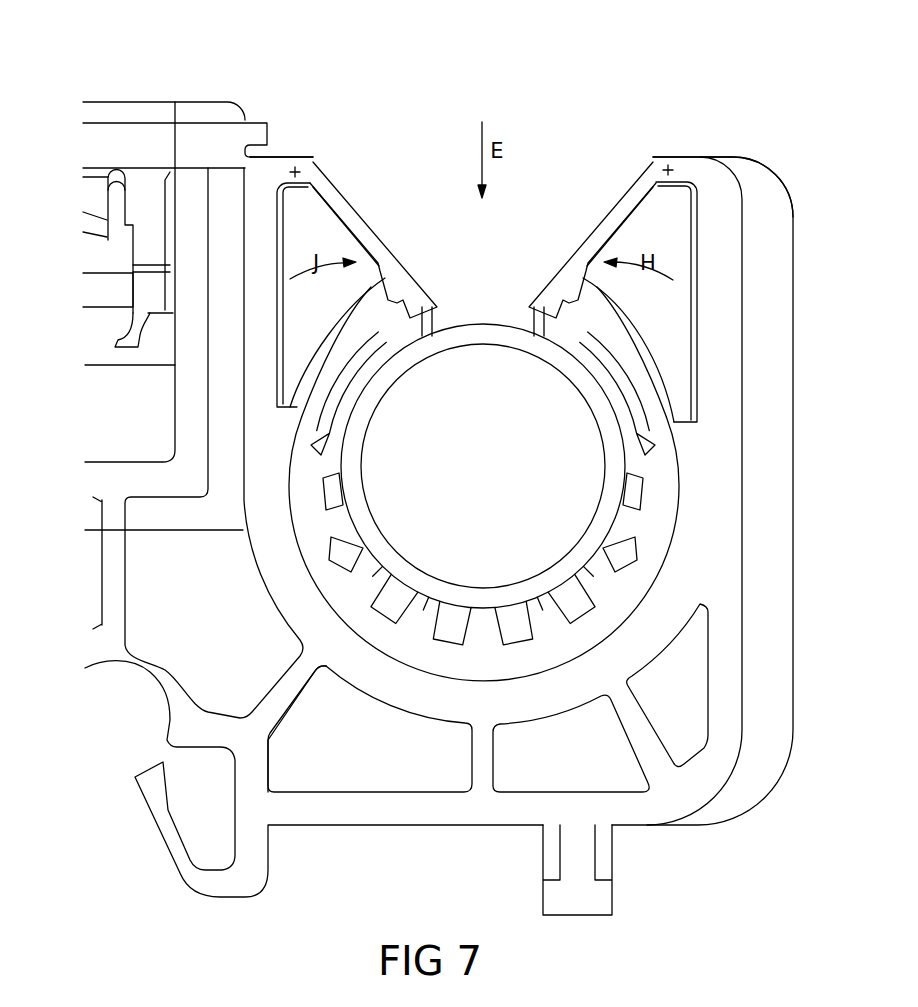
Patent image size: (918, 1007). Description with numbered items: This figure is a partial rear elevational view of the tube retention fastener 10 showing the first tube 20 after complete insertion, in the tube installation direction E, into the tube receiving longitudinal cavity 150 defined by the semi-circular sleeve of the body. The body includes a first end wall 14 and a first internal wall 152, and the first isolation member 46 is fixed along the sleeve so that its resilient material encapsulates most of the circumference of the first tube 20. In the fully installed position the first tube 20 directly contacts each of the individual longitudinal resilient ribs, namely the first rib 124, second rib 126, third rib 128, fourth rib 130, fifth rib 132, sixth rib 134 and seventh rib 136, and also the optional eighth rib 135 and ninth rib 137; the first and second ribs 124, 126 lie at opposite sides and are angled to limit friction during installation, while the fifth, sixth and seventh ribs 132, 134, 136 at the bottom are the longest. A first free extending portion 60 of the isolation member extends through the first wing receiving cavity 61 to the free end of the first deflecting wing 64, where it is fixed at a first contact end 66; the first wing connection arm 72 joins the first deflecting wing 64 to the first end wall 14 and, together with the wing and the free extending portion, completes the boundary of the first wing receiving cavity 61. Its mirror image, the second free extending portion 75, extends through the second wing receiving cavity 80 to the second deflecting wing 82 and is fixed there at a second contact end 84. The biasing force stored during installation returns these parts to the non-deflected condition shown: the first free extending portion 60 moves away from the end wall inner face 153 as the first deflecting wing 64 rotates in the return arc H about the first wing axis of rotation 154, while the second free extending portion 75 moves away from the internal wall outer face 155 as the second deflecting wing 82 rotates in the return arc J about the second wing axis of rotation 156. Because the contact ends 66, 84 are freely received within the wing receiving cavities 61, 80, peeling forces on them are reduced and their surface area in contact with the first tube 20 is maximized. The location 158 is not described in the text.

The tube retention fastener 10 is at (543, 96).
The first end wall 14 is at (727, 388).
The first tube 20 is at (484, 337).
The first isolation member 46 is at (620, 565).
The first free extending portion 60 is at (620, 363).
The first wing receiving cavity 61 is at (683, 348).
The first deflecting wing 64 is at (565, 255).
The first contact end 66 is at (540, 345).
The first wing connection arm 72 is at (686, 153).
The second free extending portion 75 is at (340, 374).
The second wing receiving cavity 80 is at (335, 232).
The second deflecting wing 82 is at (373, 228).
The second contact end 84 is at (418, 345).
The first rib 124 is at (637, 463).
The second rib 126 is at (330, 468).
The third rib 128 is at (625, 515).
The fourth rib 130 is at (348, 530).
The fifth rib 132 is at (543, 603).
The sixth rib 134 is at (482, 625).
The eighth rib 135 is at (593, 572).
The seventh rib 136 is at (415, 603).
The ninth rib 137 is at (370, 570).
The tube receiving longitudinal cavity 150 is at (625, 425).
The first internal wall 152 is at (258, 355).
The end wall inner face 153 is at (693, 240).
The first wing axis of rotation 154 is at (666, 168).
The internal wall outer face 155 is at (280, 250).
The second wing axis of rotation 156 is at (313, 163).
The housing top-left edge 158 is at (296, 156).